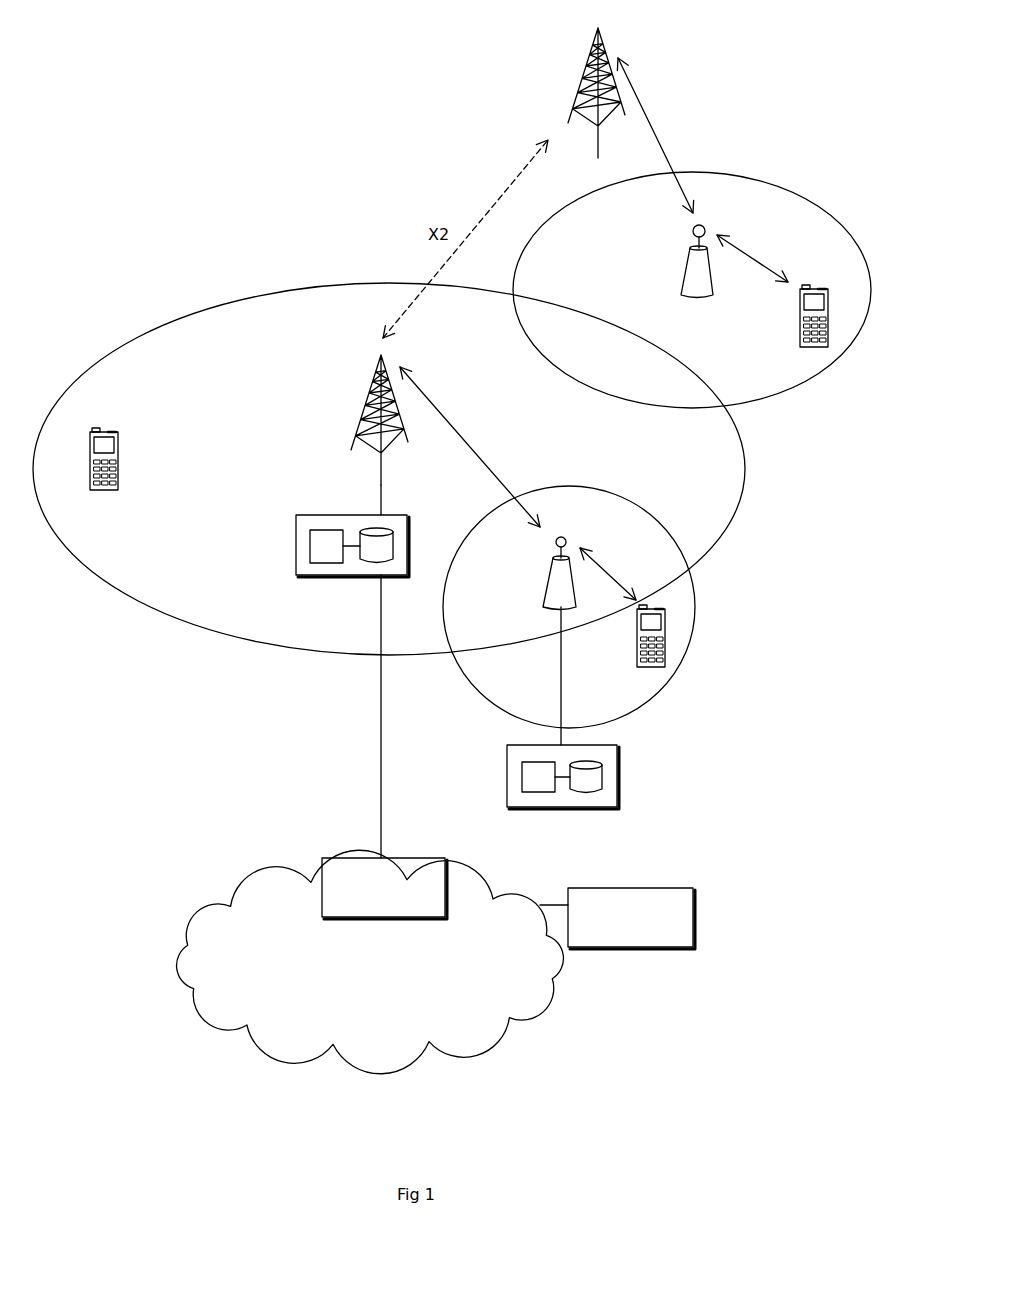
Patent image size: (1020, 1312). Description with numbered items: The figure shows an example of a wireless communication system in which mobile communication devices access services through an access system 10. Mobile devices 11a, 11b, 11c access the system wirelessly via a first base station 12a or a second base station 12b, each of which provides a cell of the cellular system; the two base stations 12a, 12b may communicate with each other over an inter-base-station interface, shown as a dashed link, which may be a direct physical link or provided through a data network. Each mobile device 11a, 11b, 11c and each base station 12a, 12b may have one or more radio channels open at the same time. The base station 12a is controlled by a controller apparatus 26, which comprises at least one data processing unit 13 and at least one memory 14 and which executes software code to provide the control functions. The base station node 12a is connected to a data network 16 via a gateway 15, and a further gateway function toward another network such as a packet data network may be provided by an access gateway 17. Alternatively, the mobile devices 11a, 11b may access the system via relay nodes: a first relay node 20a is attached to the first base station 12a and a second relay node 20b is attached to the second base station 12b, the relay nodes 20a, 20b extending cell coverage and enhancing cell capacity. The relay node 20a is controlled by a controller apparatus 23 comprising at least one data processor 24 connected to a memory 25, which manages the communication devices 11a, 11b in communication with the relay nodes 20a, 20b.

The access system 10 is at (206, 254).
The mobile device 11a is at (665, 668).
The mobile device 11b is at (828, 347).
The mobile device 11c is at (90, 490).
The base station 12a is at (364, 414).
The base station 12b is at (590, 62).
The data processing unit 13 is at (310, 553).
The memory 14 is at (379, 528).
The gateway 15 is at (322, 858).
The data network 16 is at (258, 950).
The access gateway 17 is at (693, 888).
The relay node 20a is at (563, 516).
The relay node 20b is at (693, 233).
The controller apparatus 23 is at (546, 774).
The data processor 24 is at (522, 778).
The memory 25 is at (602, 777).
The controller apparatus 26 is at (304, 528).